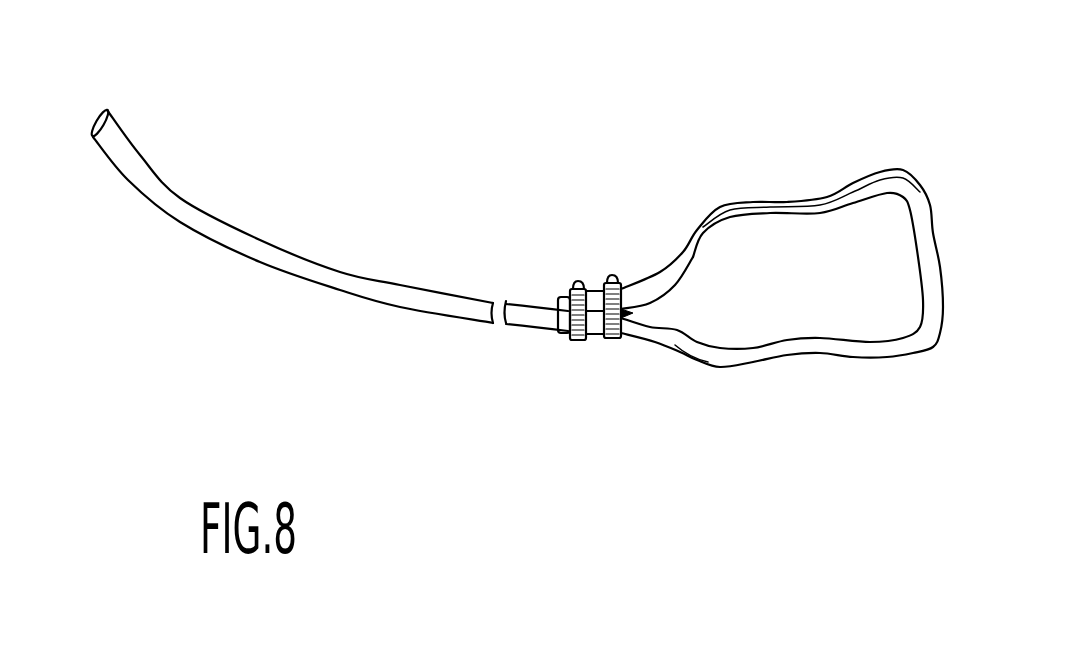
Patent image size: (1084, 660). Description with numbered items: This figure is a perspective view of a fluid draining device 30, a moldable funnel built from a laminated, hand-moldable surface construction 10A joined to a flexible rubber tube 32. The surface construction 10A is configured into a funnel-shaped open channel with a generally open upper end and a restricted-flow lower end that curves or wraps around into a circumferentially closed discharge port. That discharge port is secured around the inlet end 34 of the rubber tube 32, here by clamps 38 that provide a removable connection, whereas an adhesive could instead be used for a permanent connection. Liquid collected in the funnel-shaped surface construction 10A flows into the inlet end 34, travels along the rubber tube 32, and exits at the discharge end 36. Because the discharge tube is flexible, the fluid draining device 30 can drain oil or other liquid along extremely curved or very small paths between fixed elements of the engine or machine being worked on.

The surface construction 10A is at (823, 225).
The fluid draining device 30 is at (369, 253).
The rubber tube 32 is at (370, 303).
The inlet end 34 is at (525, 330).
The discharge end 36 is at (85, 123).
The clamps 38 is at (575, 286).